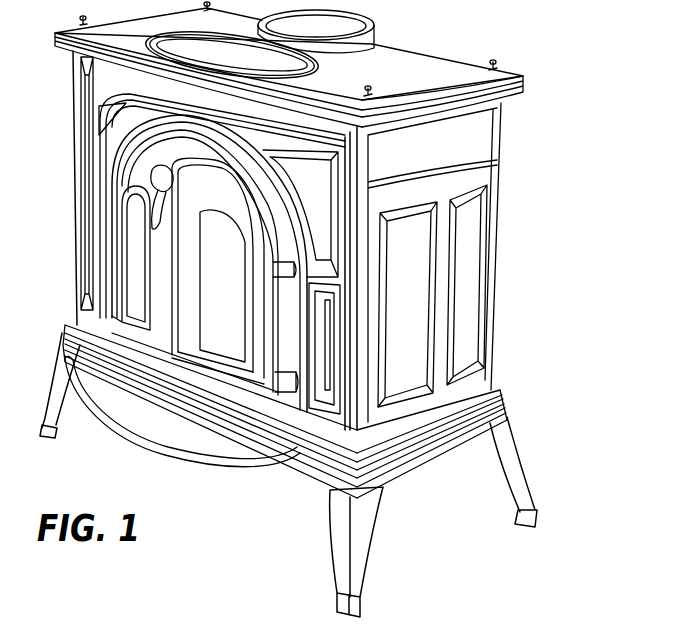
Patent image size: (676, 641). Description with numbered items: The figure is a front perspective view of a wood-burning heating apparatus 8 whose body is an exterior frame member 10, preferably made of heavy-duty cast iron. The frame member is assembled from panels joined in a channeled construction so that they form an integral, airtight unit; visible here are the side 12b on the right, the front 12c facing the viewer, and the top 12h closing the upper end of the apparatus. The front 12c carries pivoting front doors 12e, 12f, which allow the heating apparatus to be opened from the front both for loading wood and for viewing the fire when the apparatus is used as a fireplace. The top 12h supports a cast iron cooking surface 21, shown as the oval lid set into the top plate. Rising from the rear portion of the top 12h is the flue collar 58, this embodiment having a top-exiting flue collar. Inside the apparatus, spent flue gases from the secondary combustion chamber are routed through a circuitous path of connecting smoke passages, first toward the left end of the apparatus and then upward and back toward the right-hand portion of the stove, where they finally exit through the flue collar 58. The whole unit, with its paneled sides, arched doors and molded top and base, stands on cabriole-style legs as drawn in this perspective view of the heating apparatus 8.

The wood-burning heating apparatus 8 is at (491, 56).
The exterior frame member 10 is at (474, 217).
The side 12b is at (420, 322).
The front 12c is at (322, 186).
The front door 12e is at (112, 313).
The front door 12f is at (238, 291).
The top 12h is at (424, 62).
The cast iron cooking surface 21 is at (244, 62).
The flue collar 58 is at (367, 22).